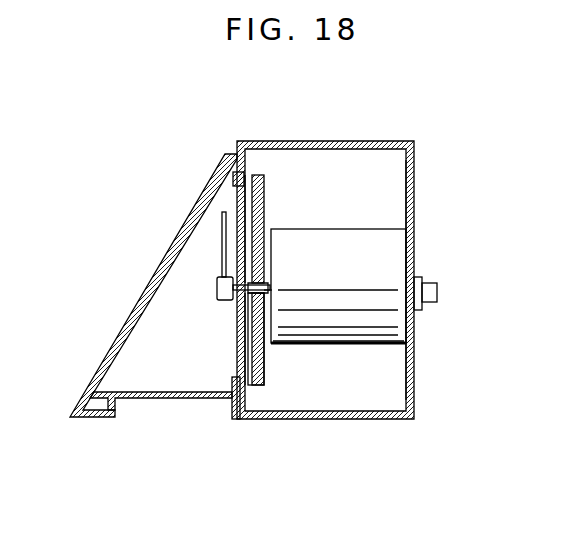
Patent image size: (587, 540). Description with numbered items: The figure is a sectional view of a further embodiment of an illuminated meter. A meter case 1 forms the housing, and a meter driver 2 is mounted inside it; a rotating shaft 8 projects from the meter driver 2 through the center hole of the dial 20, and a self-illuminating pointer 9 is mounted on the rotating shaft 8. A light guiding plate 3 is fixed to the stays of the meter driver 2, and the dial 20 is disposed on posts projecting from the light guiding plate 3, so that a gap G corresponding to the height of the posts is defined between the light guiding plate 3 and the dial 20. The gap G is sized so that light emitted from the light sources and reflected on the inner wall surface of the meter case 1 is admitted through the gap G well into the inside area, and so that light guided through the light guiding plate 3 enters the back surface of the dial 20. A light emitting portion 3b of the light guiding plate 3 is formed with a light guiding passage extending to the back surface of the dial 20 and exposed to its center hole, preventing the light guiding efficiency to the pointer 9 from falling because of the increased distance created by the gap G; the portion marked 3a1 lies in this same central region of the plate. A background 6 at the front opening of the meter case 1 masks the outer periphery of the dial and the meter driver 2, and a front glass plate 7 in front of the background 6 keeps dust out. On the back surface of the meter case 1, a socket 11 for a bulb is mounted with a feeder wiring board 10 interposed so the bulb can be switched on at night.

The meter case 1 is at (318, 143).
The gap G is at (255, 172).
The meter driver 2 is at (367, 247).
The socket 11 is at (437, 293).
The feeder wiring board 10 is at (413, 365).
The light guiding plate 3 is at (255, 390).
The rotating shaft 8 is at (267, 283).
The pivot portion 3a1 is at (250, 296).
The light emitting portion 3b is at (275, 290).
The front glass plate 7 is at (115, 338).
The background 6 is at (147, 398).
The pointer 9 is at (217, 247).
The dial 20 is at (238, 340).